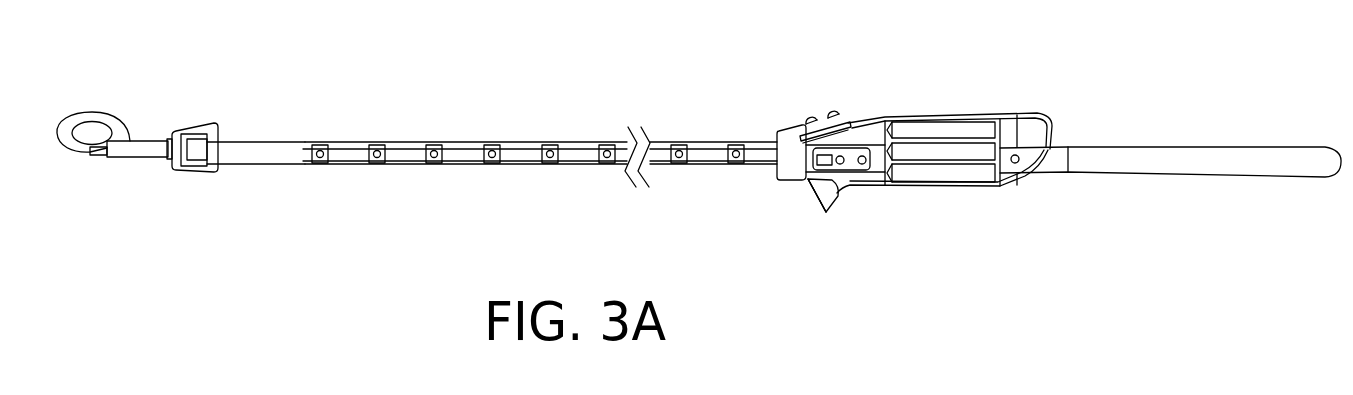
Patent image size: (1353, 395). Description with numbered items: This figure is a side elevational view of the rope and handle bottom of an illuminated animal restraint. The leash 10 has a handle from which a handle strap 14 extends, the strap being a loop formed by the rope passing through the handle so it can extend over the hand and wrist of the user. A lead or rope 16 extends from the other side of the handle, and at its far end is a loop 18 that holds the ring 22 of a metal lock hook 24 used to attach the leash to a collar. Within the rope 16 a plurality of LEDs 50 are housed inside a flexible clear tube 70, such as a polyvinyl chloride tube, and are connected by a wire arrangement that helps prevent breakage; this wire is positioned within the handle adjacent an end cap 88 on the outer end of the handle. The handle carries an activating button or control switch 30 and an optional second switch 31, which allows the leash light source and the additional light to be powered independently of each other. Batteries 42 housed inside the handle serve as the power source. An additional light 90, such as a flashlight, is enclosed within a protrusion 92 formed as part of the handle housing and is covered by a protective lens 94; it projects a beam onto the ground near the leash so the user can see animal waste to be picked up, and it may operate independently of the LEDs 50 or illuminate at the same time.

The leash 10 is at (880, 117).
The handle strap 14 is at (1143, 159).
The rope 16 is at (284, 141).
The loop 18 is at (244, 162).
The ring 22 is at (175, 170).
The metal lock hook 24 is at (128, 116).
The control switch 30 is at (807, 128).
The second switch 31 is at (837, 112).
The batteries 42 is at (958, 175).
The LEDs 50 is at (735, 165).
The tube 70 is at (520, 141).
The end cap 88 is at (775, 132).
The additional light 90 is at (810, 196).
The protrusion 92 is at (833, 198).
The protective lens 94 is at (817, 195).